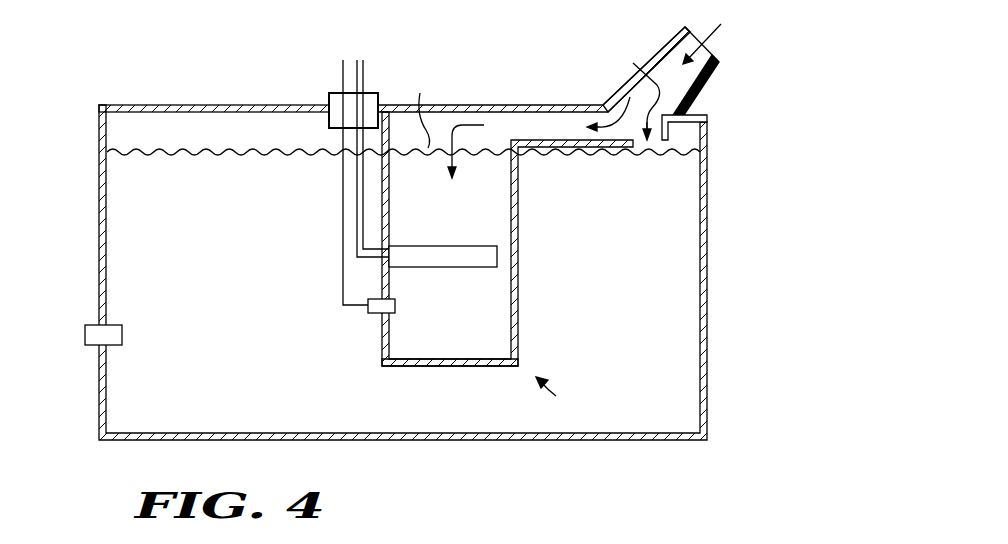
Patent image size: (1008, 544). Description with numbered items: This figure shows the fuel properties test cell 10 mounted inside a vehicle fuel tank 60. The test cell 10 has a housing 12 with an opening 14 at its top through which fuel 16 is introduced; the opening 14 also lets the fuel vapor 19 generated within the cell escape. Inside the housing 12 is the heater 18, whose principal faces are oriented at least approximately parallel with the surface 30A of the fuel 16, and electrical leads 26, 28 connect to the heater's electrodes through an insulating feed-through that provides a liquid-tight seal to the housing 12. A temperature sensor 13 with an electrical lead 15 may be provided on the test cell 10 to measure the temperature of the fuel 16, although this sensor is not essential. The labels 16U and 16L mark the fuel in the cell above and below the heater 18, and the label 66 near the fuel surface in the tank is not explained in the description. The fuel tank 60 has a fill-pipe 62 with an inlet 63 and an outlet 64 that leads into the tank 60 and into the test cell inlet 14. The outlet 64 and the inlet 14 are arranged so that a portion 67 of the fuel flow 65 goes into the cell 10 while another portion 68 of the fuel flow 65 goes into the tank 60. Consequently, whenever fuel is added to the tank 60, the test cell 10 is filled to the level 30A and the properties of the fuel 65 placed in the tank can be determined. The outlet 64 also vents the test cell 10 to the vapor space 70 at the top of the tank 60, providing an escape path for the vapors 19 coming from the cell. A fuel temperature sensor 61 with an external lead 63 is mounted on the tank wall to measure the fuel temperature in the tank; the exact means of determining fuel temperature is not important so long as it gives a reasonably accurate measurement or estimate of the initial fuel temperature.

The fuel properties test cell 10 is at (561, 396).
The housing 12 is at (436, 367).
The temperature sensor 13 is at (374, 314).
The opening 14 is at (565, 122).
The electrical lead 15 is at (343, 79).
The fuel 16 is at (503, 301).
The upper chamber portion 16U is at (499, 208).
The lower chamber portion 16L is at (432, 330).
The heater 18 is at (433, 246).
The fuel vapor 19 is at (527, 117).
The electrical lead 26 is at (355, 65).
The electrical lead 28 is at (367, 65).
The fuel surface 30A is at (421, 109).
The vehicle fuel tank 60 is at (709, 304).
The fuel temperature sensor 61 is at (124, 334).
The fill-pipe 62 is at (712, 82).
The inlet 63 is at (667, 64).
The outlet 64 is at (645, 148).
The fuel flow 65 is at (710, 36).
The water level 66 is at (567, 141).
The portion of fuel flow 67 is at (610, 103).
The portion of fuel flow 68 is at (634, 94).
The vapor space 70 is at (222, 124).